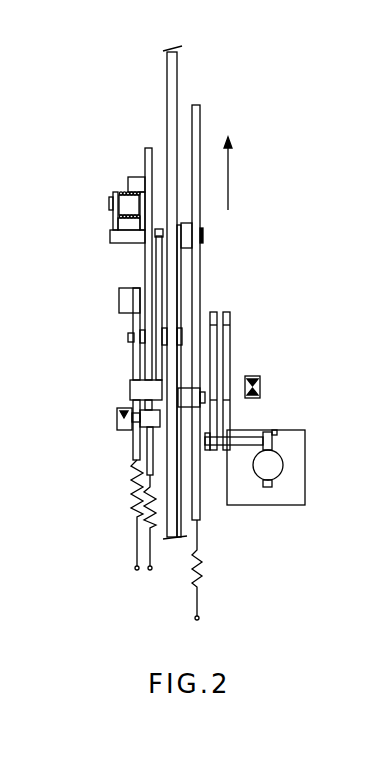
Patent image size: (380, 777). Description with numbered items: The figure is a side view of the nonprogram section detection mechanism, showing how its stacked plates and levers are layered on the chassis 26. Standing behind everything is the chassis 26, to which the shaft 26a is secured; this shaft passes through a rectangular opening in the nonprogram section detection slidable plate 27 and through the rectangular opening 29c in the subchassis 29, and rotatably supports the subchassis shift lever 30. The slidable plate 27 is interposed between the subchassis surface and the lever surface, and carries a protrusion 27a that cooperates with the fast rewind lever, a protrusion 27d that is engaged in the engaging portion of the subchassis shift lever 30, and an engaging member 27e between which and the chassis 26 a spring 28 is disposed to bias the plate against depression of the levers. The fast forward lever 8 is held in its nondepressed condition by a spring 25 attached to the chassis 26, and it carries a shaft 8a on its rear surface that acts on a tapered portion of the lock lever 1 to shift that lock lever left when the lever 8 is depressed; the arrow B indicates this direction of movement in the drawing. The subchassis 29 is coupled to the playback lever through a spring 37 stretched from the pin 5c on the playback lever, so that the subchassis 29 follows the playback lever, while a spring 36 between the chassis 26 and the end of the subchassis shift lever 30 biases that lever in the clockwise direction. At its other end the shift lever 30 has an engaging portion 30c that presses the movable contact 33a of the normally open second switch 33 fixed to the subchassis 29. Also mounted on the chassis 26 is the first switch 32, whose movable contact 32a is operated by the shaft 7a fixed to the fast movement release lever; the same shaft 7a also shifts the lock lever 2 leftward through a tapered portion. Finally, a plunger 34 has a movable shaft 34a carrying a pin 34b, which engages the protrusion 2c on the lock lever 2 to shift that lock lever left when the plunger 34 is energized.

The lock lever 1 is at (213, 330).
The lock lever 2 is at (228, 335).
The protrusion 2c is at (277, 432).
The pin 5c is at (110, 237).
The shaft 7a is at (236, 447).
The fast forward lever 8 is at (200, 115).
The shaft 8a is at (235, 437).
The spring 25 is at (203, 567).
The chassis 26 is at (173, 80).
The shaft 26a is at (128, 338).
The nonprogram section detection slidable plate 27 is at (160, 265).
The protrusion 27a is at (190, 395).
The protrusion 27d is at (160, 385).
The engaging member 27e is at (147, 423).
The spring 28 is at (150, 523).
The subchassis 29 is at (145, 152).
The rectangular opening 29c is at (129, 182).
The subchassis shift lever 30 is at (137, 357).
The engaging portion 30c is at (120, 300).
The first switch 32 is at (260, 380).
The movable contact 32a is at (260, 392).
The second switch 33 is at (117, 419).
The movable contact 33a is at (123, 411).
The plunger 34 is at (305, 495).
The movable shaft 34a is at (283, 465).
The pin 34b is at (277, 447).
The spring 36 is at (137, 510).
The spring 37 is at (118, 194).
The direction of movement B is at (228, 167).